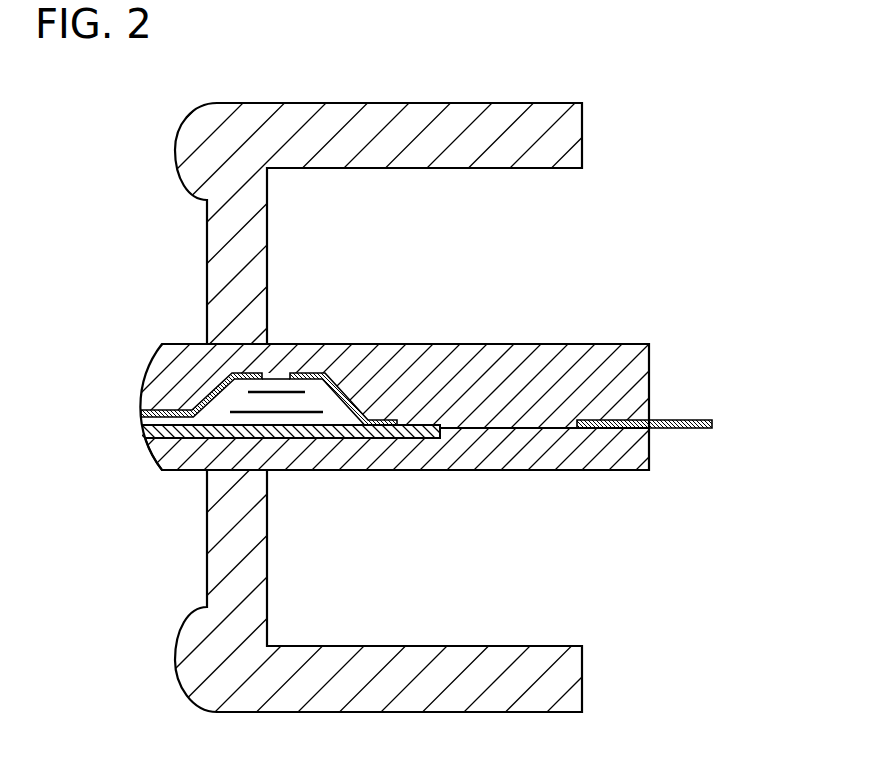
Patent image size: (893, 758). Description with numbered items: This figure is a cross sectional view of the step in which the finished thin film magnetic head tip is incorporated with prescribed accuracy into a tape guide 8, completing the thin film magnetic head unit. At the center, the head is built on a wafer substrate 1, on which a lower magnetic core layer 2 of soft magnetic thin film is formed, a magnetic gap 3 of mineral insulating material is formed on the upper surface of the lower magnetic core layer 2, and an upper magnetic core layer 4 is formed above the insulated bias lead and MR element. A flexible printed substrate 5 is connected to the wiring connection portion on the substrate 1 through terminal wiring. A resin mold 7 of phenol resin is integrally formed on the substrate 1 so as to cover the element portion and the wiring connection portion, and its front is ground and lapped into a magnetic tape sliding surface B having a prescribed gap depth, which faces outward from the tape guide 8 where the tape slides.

The wafer substrate 1 is at (649, 448).
The lower magnetic core layer 2 is at (417, 433).
The magnetic gap 3 is at (142, 415).
The upper magnetic core layer 4 is at (352, 388).
The flexible printed substrate 5 is at (675, 418).
The resin mold 7 is at (548, 373).
The tape guide 8 is at (528, 162).
The magnetic tape sliding surface B is at (135, 370).